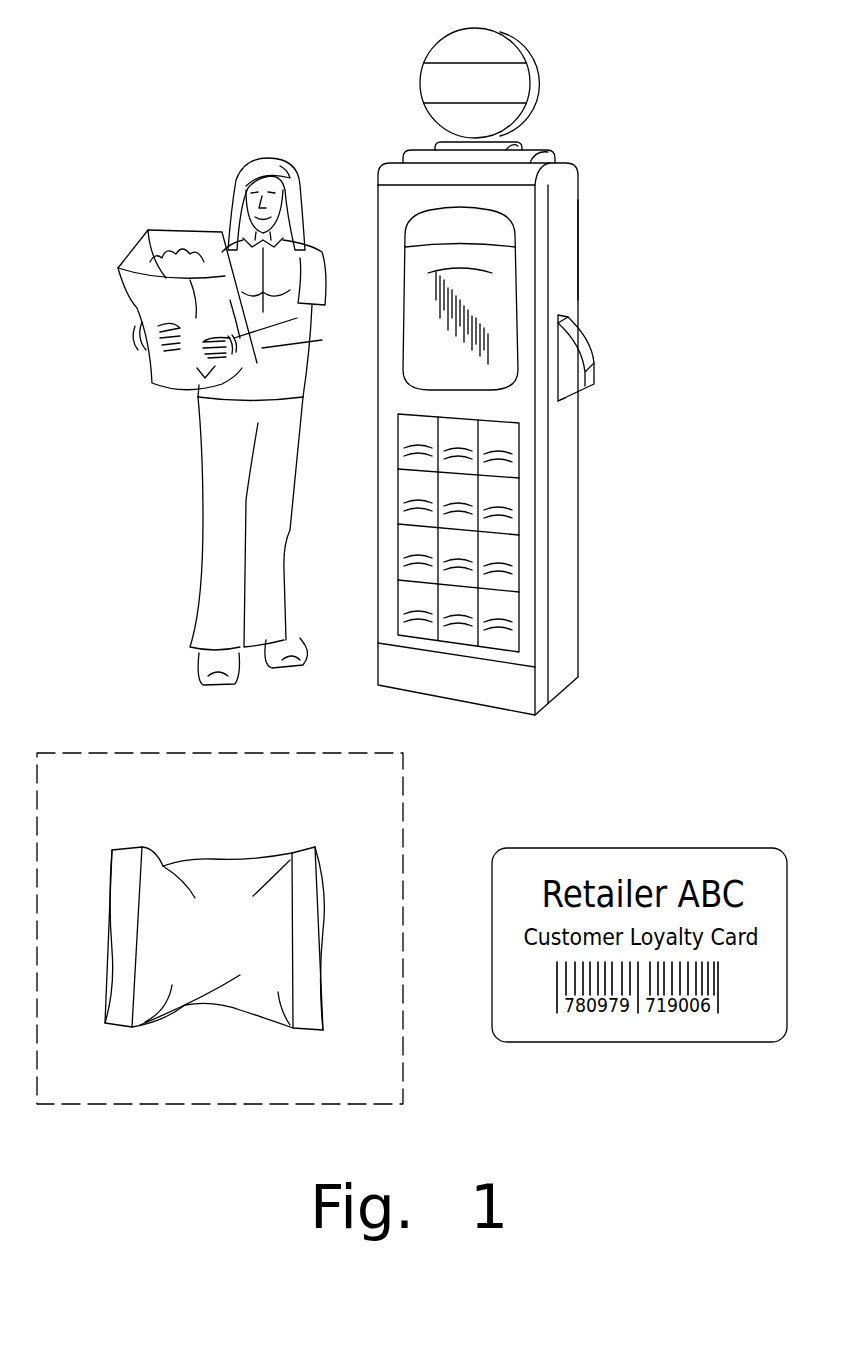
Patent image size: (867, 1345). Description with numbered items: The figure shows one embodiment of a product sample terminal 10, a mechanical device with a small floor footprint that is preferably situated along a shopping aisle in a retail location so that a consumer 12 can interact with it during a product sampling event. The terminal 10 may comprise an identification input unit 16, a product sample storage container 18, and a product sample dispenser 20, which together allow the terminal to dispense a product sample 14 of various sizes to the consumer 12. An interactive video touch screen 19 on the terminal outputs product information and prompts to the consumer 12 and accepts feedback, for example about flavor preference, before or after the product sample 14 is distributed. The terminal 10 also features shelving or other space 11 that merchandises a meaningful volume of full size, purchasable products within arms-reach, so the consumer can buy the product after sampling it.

The product sample terminal 10 is at (627, 114).
The shelving or other space 11 is at (398, 508).
The consumer 12 is at (150, 148).
The product sample 14 is at (120, 850).
The identification input unit 16 is at (578, 396).
The product sample storage container 18 is at (578, 250).
The interactive video touch screen 19 is at (418, 288).
The product sample dispenser 20 is at (583, 346).